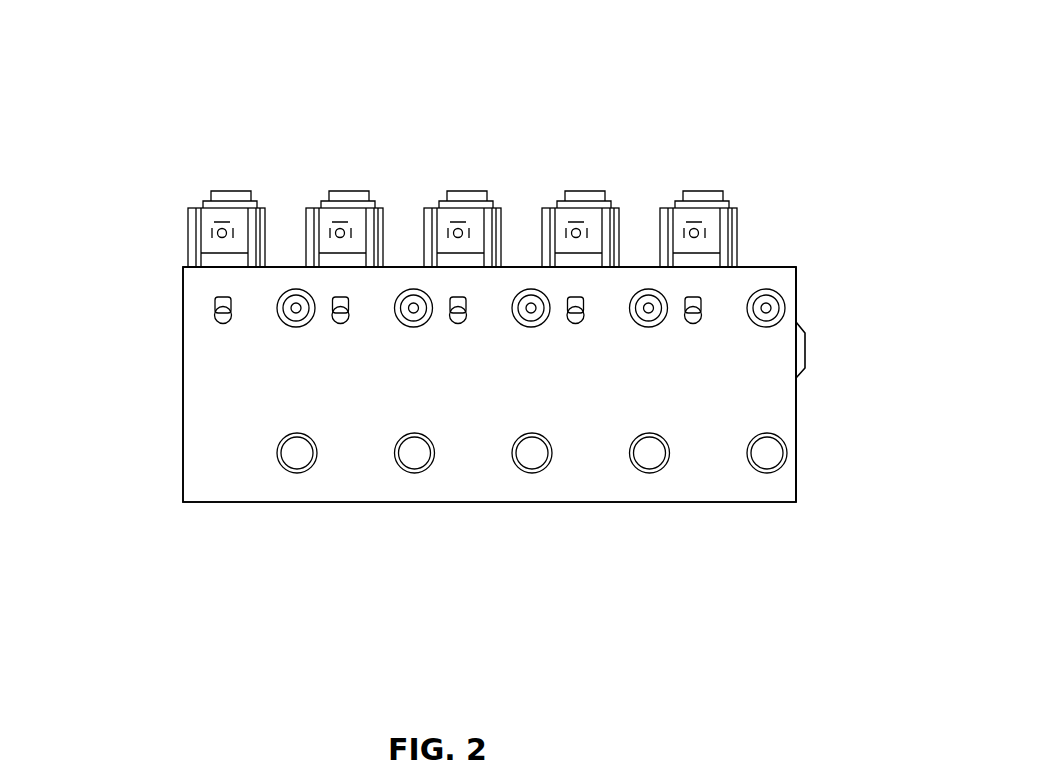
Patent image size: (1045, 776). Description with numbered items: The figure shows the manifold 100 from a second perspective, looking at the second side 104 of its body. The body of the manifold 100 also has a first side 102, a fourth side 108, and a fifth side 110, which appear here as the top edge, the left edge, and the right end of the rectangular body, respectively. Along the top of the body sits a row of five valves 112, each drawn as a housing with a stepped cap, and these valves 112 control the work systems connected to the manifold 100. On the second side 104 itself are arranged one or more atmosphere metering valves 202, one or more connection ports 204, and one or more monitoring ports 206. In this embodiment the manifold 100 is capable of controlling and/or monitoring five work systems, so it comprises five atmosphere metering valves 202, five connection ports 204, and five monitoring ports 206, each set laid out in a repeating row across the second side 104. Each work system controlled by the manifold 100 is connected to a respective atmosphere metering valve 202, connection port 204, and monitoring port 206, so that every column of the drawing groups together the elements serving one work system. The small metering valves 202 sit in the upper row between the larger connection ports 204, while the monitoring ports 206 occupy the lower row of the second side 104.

The manifold 100 is at (453, 70).
The first side 102 is at (788, 265).
The second side 104 is at (228, 428).
The fourth side 108 is at (183, 405).
The fifth side 110 is at (797, 428).
The valve 112 is at (210, 182).
The atmosphere metering valve 202 is at (213, 300).
The connection port 204 is at (293, 283).
The monitoring port 206 is at (290, 475).